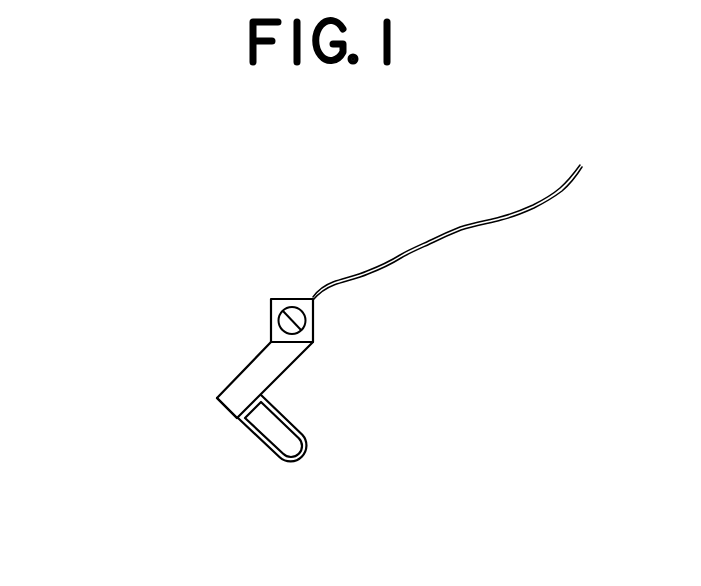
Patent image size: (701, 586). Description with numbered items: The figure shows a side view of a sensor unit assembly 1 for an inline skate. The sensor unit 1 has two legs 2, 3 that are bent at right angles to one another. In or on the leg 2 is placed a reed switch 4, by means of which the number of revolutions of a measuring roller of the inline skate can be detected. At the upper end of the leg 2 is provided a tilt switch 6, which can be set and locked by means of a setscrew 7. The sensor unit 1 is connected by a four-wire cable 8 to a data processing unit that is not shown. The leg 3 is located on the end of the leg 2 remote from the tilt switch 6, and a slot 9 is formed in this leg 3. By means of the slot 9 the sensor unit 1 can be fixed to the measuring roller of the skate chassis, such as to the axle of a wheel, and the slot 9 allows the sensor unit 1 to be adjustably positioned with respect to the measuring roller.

The sensor unit assembly 1 is at (152, 424).
The leg 2 is at (242, 368).
The leg 3 is at (274, 463).
The reed switch 4 is at (223, 408).
The tilt switch 6 is at (270, 301).
The setscrew 7 is at (292, 310).
The four-wire cable 8 is at (458, 227).
The slot 9 is at (279, 437).